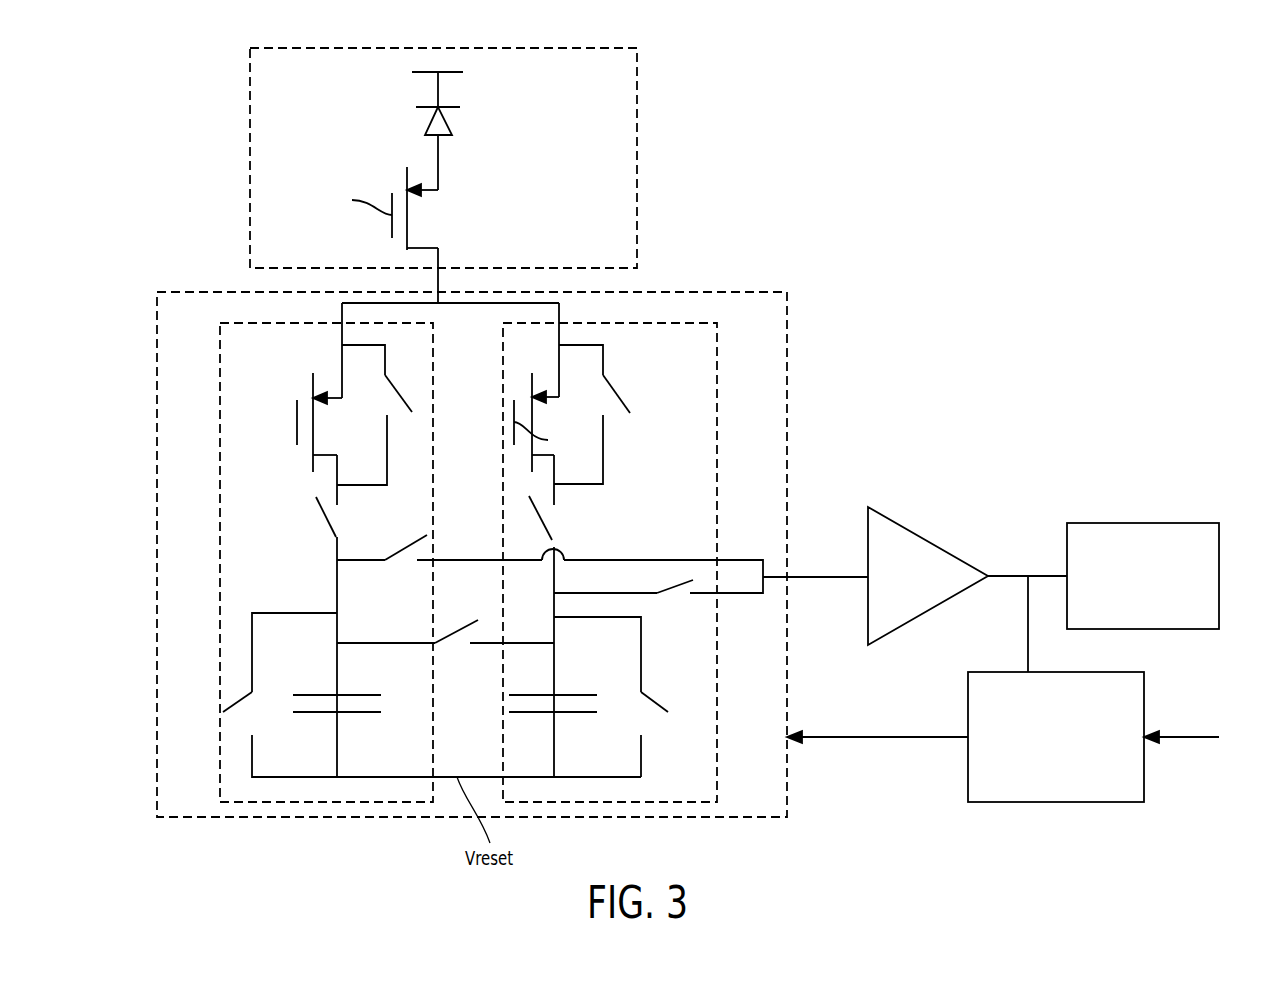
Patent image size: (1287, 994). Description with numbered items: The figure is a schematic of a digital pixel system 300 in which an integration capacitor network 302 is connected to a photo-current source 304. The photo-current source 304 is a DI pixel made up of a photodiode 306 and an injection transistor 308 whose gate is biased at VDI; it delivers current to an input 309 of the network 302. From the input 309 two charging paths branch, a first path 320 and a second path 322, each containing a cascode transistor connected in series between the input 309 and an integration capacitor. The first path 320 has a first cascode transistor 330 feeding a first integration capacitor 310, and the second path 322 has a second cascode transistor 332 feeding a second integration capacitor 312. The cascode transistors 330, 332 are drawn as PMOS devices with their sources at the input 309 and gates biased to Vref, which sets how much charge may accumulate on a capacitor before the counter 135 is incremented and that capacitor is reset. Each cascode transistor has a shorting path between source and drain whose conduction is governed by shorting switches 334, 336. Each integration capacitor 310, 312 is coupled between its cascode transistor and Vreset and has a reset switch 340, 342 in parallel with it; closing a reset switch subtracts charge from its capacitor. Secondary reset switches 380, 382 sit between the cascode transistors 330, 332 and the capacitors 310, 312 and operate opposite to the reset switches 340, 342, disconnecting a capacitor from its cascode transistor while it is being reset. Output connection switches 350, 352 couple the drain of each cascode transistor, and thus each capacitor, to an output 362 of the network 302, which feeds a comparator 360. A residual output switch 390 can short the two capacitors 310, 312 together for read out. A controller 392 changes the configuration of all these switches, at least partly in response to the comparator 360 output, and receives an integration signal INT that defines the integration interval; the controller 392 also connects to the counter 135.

The digital pixel system 300 is at (1148, 158).
The integration capacitor network 302 is at (787, 343).
The photo-current source 304 is at (637, 157).
The photodiode 306 is at (425, 128).
The injection transistor 308 is at (407, 217).
The input 309 is at (438, 303).
The first integration capacitor 310 is at (315, 693).
The second integration capacitor 312 is at (575, 693).
The first path 320 is at (220, 380).
The second path 322 is at (693, 323).
The first cascode transistor 330 is at (313, 463).
The second cascode transistor 332 is at (514, 443).
The shorting switch 334 is at (403, 398).
The shorting switch 336 is at (617, 395).
The reset switch 340 is at (250, 697).
The reset switch 342 is at (642, 693).
The first output connection switch 350 is at (393, 553).
The second output connection switch 352 is at (668, 590).
The comparator 360 is at (927, 538).
The output 362 is at (765, 570).
The secondary reset switch 380 is at (327, 517).
The secondary reset switch 382 is at (545, 522).
The residual output switch 390 is at (452, 640).
The controller 392 is at (1144, 705).
The counter 135 is at (1219, 577).